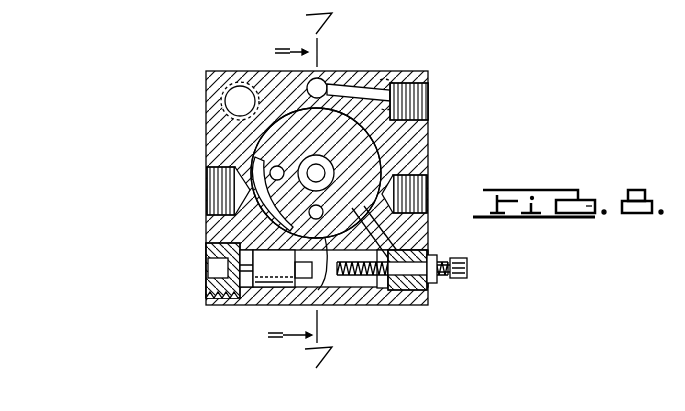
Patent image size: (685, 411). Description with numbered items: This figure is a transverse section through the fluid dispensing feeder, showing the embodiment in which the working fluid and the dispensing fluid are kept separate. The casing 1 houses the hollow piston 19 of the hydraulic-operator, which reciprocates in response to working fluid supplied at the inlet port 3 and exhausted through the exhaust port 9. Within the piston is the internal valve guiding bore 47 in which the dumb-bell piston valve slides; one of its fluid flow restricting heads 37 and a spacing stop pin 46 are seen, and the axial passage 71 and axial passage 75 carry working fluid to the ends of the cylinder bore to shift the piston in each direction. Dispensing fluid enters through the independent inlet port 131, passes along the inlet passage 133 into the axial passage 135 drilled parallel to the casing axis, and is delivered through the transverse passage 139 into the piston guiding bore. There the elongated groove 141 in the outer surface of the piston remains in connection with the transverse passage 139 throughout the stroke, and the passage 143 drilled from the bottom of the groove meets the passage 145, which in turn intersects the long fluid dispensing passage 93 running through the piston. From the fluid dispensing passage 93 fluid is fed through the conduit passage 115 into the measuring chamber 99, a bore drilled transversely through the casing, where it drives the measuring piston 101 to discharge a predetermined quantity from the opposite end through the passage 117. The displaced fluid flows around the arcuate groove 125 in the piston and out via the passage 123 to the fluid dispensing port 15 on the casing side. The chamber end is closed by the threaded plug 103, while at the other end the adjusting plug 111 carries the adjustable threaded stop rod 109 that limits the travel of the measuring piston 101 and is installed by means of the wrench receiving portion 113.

The casing 1 is at (220, 134).
The inlet port 3 is at (392, 77).
The exhaust port 9 is at (230, 102).
The fluid dispensing port 15 is at (218, 208).
The hollow piston 19 is at (420, 127).
The fluid flow restricting head 37 is at (298, 165).
The spacing stop pin 46 is at (263, 218).
The valve guiding bore 47 is at (305, 153).
The axial passage 71 is at (270, 173).
The axial passage 75 is at (263, 220).
The fluid dispensing passage 93 is at (300, 288).
The measuring chamber 99 is at (353, 287).
The measuring piston 101 is at (267, 275).
The plug 103 is at (207, 289).
The adjustable threaded stop rod 109 is at (378, 287).
The adjusting plug 111 is at (417, 288).
The wrench receiving portion 113 is at (433, 285).
The conduit passage 115 is at (427, 245).
The passage 117 is at (240, 242).
The passage 123 is at (245, 184).
The arcuate groove 125 is at (427, 227).
The independent inlet port 131 is at (418, 95).
The inlet passage 133 is at (350, 90).
The axial passage 135 is at (307, 85).
The transverse passage 139 is at (263, 77).
The groove 141 is at (247, 72).
The passage 143 is at (392, 147).
The passage 145 is at (393, 163).